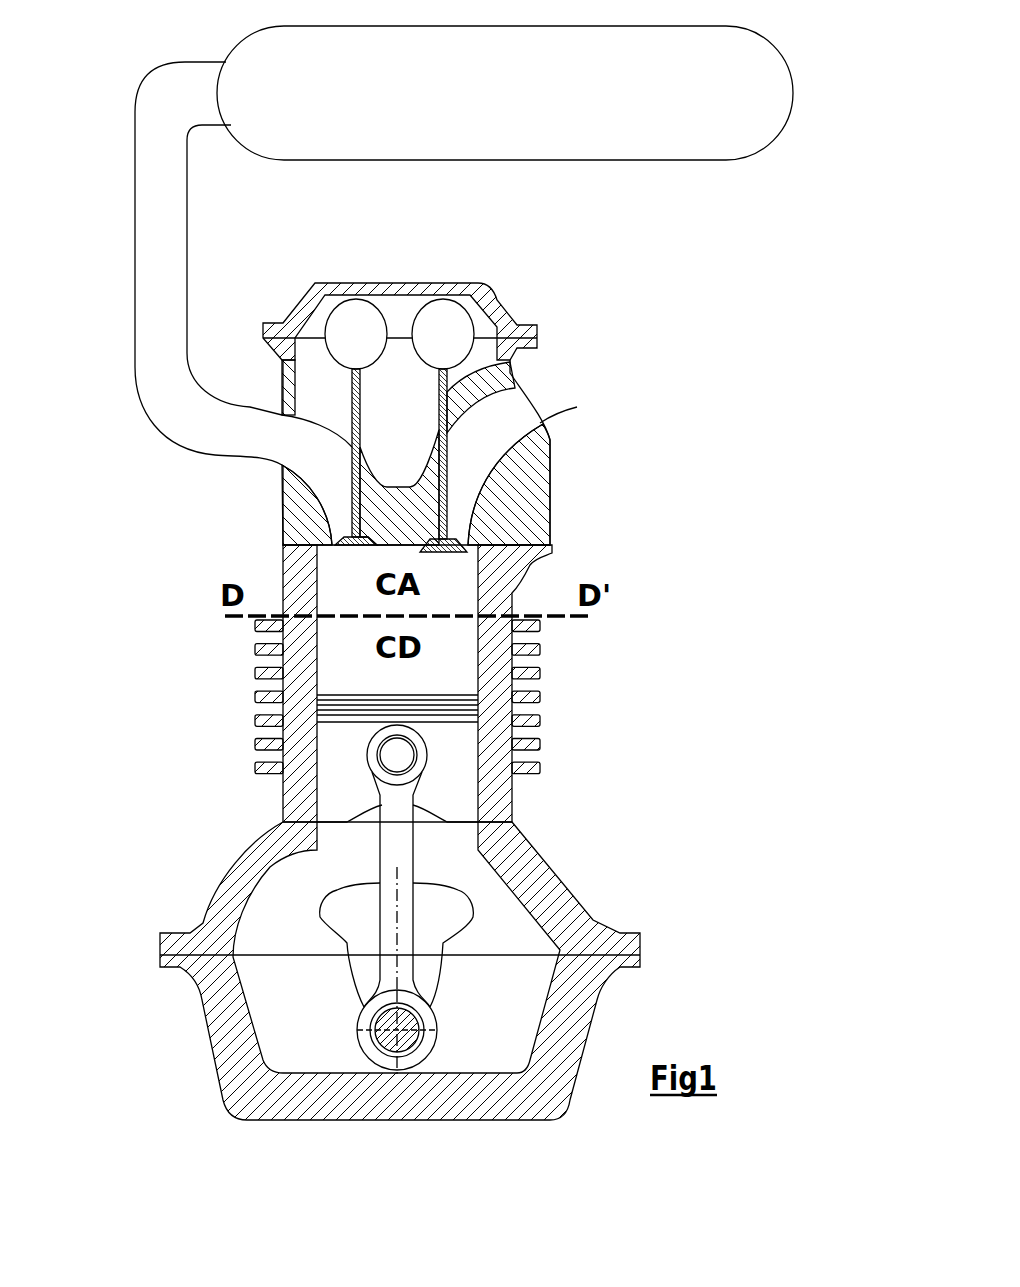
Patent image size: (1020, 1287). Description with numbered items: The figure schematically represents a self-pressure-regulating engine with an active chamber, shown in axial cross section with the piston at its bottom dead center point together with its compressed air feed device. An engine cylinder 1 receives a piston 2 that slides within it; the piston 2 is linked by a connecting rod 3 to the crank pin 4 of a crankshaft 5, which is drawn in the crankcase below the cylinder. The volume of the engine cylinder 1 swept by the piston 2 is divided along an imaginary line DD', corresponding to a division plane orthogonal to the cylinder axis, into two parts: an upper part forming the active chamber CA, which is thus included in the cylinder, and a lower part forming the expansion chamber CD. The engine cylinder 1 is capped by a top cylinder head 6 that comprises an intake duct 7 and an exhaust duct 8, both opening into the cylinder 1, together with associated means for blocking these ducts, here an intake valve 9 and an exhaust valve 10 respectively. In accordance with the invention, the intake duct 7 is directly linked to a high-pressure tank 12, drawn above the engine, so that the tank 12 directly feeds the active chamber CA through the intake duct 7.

The engine cylinder 1 is at (483, 642).
The piston 2 is at (450, 773).
The connecting rod 3 is at (397, 843).
The crank pin 4 is at (410, 1040).
The crankshaft 5 is at (357, 920).
The top cylinder head 6 is at (510, 495).
The intake duct 7 is at (327, 458).
The exhaust duct 8 is at (510, 412).
The intake valve 9 is at (350, 395).
The exhaust valve 10 is at (497, 340).
The high-pressure tank 12 is at (377, 95).